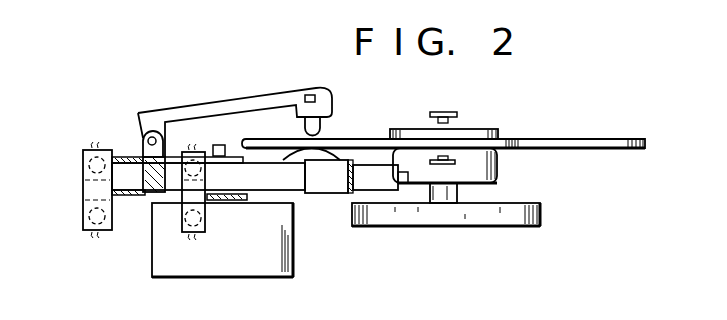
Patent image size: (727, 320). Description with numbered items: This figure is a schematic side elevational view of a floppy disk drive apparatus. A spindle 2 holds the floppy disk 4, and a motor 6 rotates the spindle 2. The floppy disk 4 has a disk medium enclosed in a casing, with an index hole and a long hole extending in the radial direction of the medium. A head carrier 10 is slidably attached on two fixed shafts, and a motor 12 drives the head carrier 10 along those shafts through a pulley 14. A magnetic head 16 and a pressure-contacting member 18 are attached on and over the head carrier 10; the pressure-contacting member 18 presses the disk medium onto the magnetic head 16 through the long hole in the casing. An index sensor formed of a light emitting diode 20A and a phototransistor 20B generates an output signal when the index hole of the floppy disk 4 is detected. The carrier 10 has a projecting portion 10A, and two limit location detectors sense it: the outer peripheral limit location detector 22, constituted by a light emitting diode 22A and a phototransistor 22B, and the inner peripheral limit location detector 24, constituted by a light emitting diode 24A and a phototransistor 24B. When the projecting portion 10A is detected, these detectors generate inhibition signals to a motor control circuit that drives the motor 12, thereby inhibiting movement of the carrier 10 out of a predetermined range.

The spindle 2 is at (484, 162).
The floppy disk 4 is at (596, 139).
The motor 6 is at (485, 223).
The head carrier 10 is at (322, 192).
The projecting portion 10A is at (125, 193).
The motor 12 is at (240, 276).
The pulley 14 is at (245, 200).
The magnetic head 16 is at (329, 152).
The pressure-contacting member 18 is at (297, 88).
The light emitting diode 20A is at (458, 166).
The phototransistor 20B is at (440, 112).
The outer peripheral limit location detector 22 is at (83, 185).
The light emitting diode 22A is at (90, 228).
The phototransistor 22B is at (93, 158).
The inner peripheral limit location detector 24 is at (207, 221).
The light emitting diode 24A is at (187, 227).
The phototransistor 24B is at (191, 159).